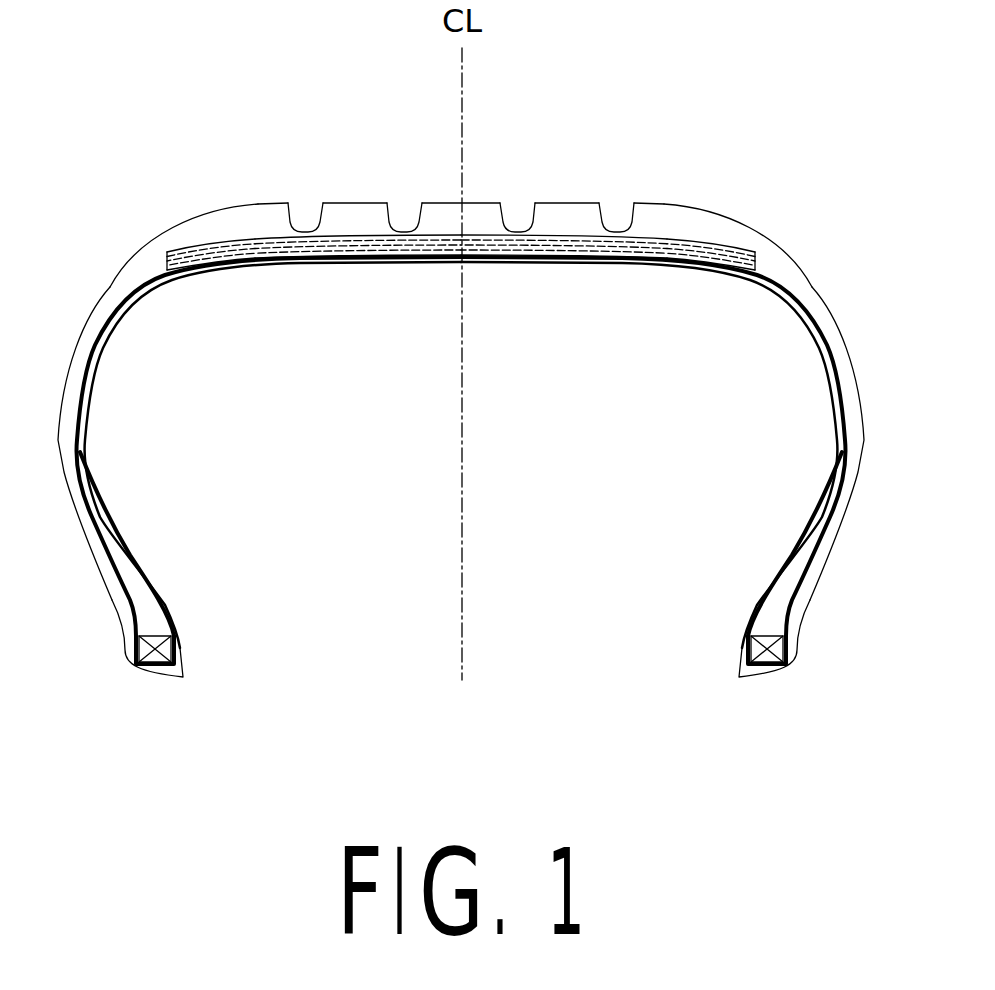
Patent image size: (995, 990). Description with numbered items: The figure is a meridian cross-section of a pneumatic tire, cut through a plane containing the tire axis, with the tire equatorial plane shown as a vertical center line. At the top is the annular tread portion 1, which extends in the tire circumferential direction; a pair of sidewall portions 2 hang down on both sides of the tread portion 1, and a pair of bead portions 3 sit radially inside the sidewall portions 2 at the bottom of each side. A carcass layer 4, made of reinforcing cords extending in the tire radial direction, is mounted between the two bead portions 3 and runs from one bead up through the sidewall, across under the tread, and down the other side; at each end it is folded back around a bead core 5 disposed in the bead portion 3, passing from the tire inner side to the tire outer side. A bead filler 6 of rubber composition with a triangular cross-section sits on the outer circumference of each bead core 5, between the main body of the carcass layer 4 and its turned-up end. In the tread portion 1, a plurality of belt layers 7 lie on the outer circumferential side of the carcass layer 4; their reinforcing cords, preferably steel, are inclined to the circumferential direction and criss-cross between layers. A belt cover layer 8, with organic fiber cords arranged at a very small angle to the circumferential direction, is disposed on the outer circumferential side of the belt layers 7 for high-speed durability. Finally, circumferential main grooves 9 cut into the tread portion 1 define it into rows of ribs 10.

The tread portion 1 is at (477, 188).
The sidewall portion 2 is at (63, 378).
The bead portion 3 is at (120, 641).
The carcass layer 4 is at (122, 320).
The bead core 5 is at (177, 648).
The bead filler 6 is at (148, 610).
The belt layer 7 is at (648, 262).
The belt cover layer 8 is at (227, 245).
The main groove 9 is at (310, 207).
The rib 10 is at (268, 207).